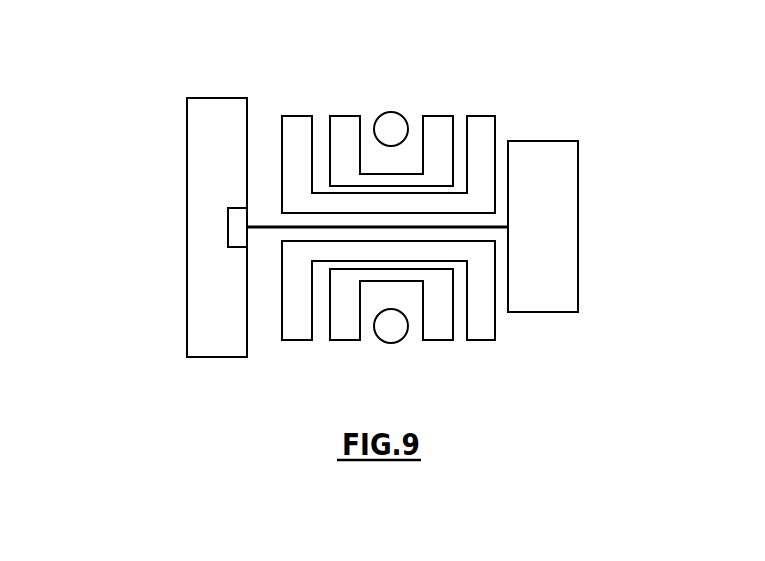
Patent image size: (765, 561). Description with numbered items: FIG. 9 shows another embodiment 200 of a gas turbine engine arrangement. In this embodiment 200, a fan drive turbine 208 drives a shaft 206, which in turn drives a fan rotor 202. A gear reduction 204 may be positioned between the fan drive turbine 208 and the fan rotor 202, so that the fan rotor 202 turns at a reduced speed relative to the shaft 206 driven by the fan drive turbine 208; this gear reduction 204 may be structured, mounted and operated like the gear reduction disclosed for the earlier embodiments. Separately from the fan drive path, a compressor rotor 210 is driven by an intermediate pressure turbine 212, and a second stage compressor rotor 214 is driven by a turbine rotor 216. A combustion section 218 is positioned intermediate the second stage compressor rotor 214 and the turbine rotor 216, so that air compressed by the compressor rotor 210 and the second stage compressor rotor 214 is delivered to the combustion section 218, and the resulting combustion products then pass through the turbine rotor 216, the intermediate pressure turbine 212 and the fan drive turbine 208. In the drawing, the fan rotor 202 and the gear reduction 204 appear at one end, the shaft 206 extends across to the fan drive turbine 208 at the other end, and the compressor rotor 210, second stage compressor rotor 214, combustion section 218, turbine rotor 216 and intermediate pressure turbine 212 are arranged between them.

The embodiment 200 is at (148, 70).
The fan rotor 202 is at (202, 158).
The gear reduction 204 is at (233, 243).
The shaft 206 is at (479, 227).
The fan drive turbine 208 is at (565, 209).
The compressor rotor 210 is at (296, 317).
The intermediate pressure turbine 212 is at (485, 228).
The second stage compressor rotor 214 is at (343, 120).
The turbine rotor 216 is at (438, 120).
The combustion section 218 is at (392, 113).